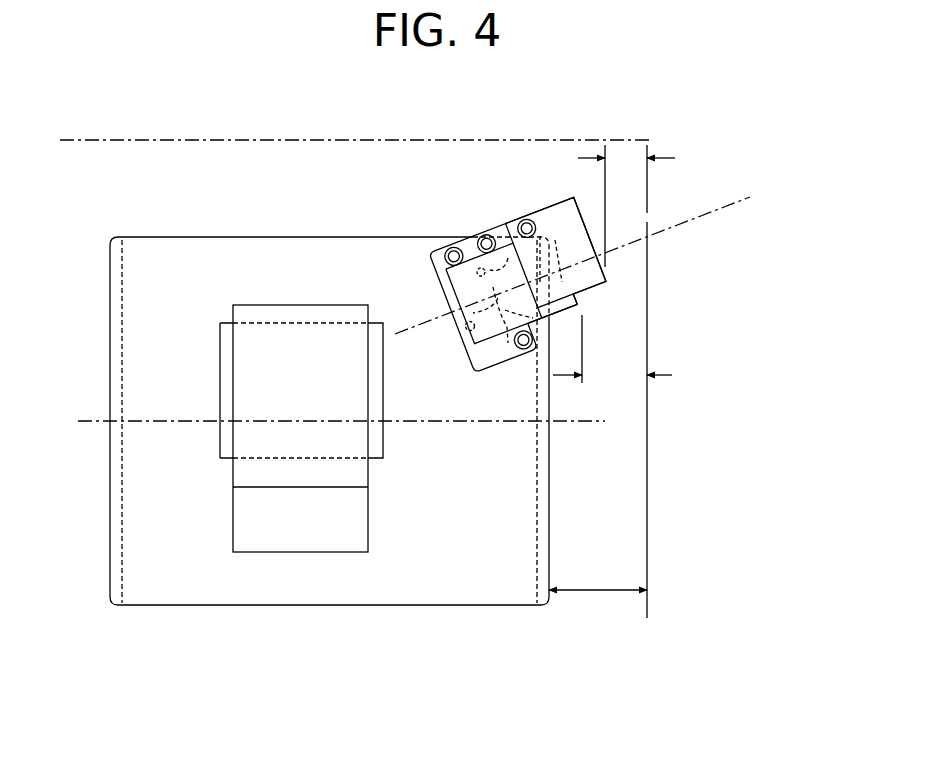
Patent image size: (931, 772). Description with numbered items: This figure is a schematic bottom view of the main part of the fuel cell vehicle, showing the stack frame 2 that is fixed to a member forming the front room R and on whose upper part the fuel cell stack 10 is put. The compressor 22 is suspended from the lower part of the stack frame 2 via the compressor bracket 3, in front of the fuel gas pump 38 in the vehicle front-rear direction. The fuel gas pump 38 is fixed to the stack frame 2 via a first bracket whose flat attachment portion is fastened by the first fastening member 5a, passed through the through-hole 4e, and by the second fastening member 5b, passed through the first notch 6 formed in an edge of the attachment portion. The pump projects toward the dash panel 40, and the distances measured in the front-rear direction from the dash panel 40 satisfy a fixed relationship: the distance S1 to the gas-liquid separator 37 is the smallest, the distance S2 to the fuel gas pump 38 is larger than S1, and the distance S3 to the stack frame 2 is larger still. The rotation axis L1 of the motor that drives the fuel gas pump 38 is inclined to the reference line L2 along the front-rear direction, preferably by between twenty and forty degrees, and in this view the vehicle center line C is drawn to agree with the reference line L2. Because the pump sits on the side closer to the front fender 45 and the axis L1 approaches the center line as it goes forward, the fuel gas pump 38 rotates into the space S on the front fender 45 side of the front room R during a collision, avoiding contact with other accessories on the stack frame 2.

The stack frame 2 is at (247, 262).
The compressor bracket 3 is at (222, 436).
The through-hole 4e is at (440, 387).
The first fastening member 5a is at (437, 297).
The second fastening member 5b is at (472, 238).
The first notch 6 is at (512, 378).
The fuel cell stack 10 is at (125, 290).
The compressor 22 is at (320, 533).
The gas-liquid separator 37 is at (557, 203).
The fuel gas pump 38 is at (692, 306).
The dash panel 40 is at (652, 481).
The front fender 45 is at (344, 139).
The space S is at (479, 197).
The front room R is at (73, 221).
The center line C is at (733, 669).
The rotation axis L1 is at (713, 206).
The reference line L2 is at (437, 424).
The distance S1 is at (626, 181).
The distance S2 is at (612, 349).
The distance S3 is at (598, 573).